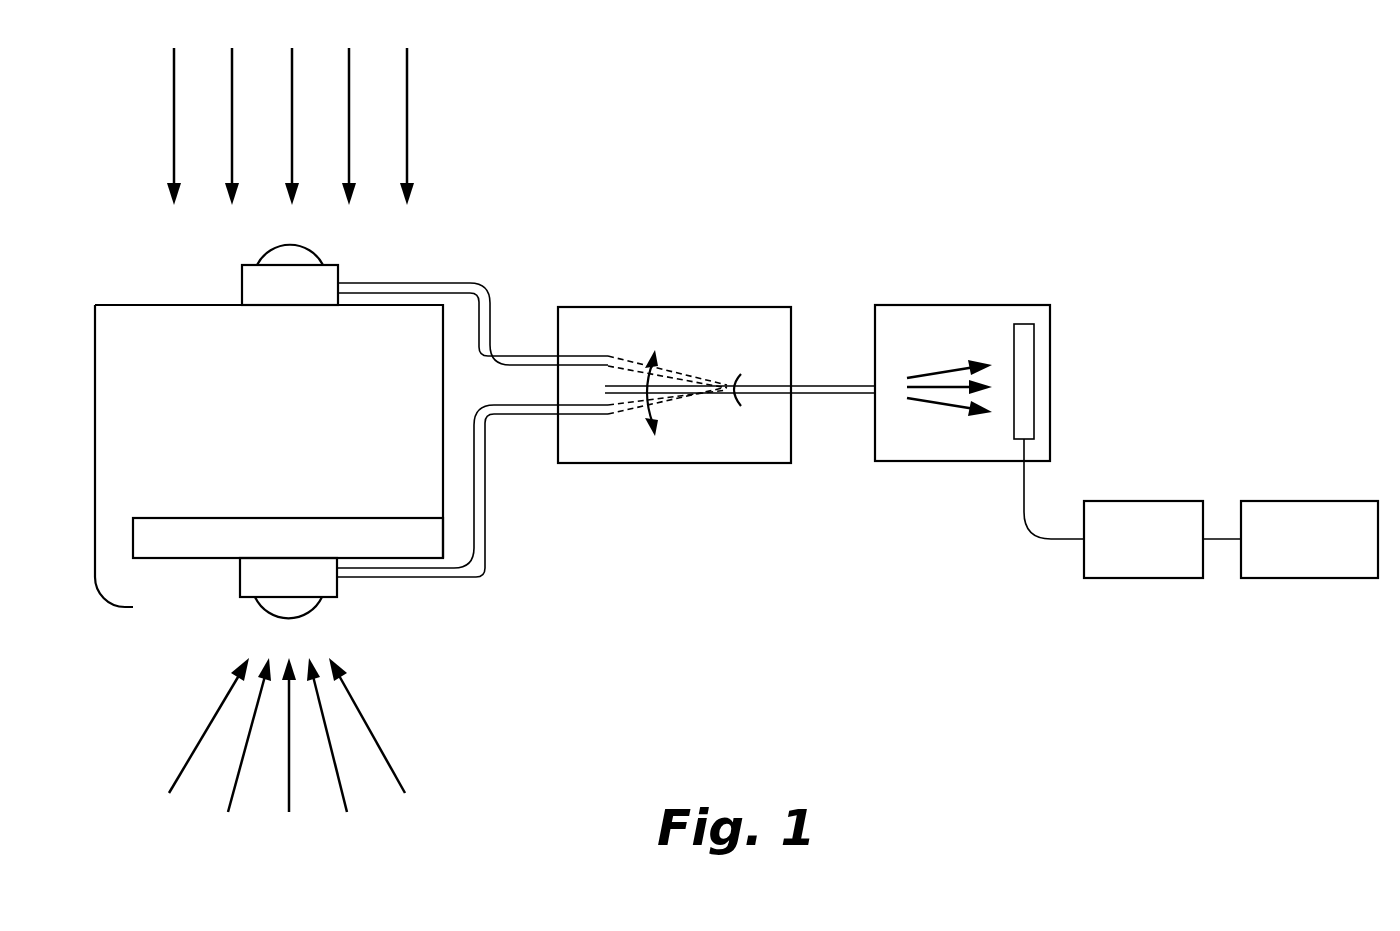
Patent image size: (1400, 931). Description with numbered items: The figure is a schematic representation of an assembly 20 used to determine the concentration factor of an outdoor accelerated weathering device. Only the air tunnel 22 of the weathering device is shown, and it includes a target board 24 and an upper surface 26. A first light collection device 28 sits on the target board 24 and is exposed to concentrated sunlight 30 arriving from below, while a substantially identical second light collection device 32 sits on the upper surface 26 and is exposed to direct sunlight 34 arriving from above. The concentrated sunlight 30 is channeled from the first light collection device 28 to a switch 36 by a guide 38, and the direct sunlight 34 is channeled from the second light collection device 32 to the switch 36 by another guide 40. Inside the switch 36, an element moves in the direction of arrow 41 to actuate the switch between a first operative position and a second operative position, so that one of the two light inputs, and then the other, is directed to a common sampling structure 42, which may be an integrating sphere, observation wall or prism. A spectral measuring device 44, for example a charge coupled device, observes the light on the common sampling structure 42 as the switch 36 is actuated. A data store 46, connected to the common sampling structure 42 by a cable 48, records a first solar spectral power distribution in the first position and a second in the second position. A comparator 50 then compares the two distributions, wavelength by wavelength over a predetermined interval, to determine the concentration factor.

The assembly 20 is at (681, 216).
The air tunnel 22 is at (100, 268).
The target board 24 is at (295, 518).
The upper surface 26 is at (188, 302).
The first light collection device 28 is at (240, 598).
The concentrated sunlight 30 is at (380, 747).
The second light collection device 32 is at (323, 282).
The direct sunlight 34 is at (407, 115).
The switch 36 is at (757, 307).
The guide 38 is at (478, 574).
The guide 40 is at (472, 283).
The arrow 41 is at (646, 377).
The common sampling structure 42 is at (962, 305).
The spectral measuring device 44 is at (1024, 324).
The data store 46 is at (1147, 501).
The cable 48 is at (1043, 540).
The comparator 50 is at (1312, 501).